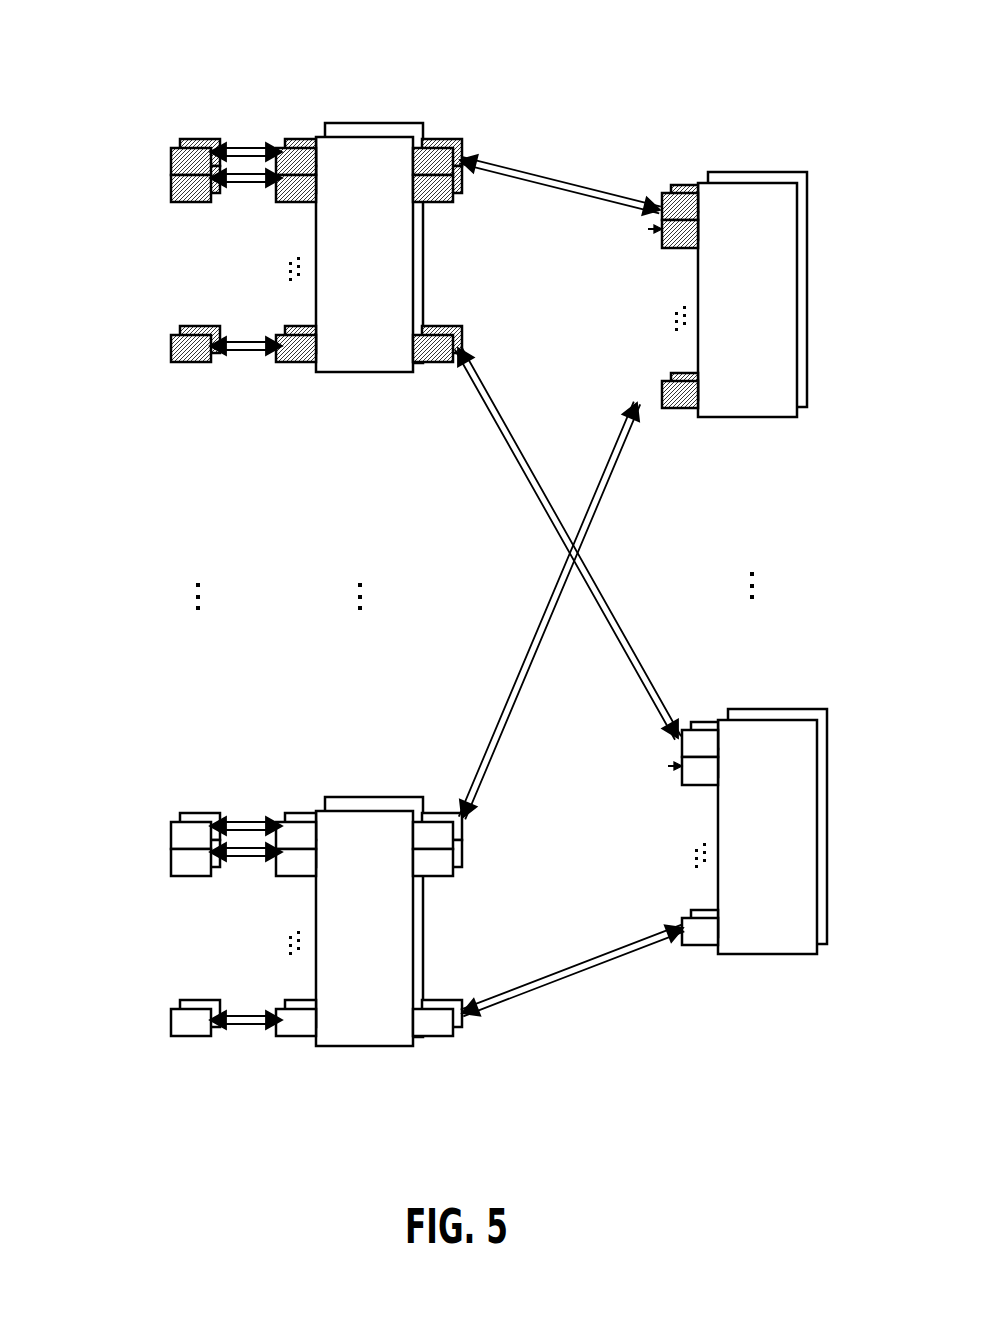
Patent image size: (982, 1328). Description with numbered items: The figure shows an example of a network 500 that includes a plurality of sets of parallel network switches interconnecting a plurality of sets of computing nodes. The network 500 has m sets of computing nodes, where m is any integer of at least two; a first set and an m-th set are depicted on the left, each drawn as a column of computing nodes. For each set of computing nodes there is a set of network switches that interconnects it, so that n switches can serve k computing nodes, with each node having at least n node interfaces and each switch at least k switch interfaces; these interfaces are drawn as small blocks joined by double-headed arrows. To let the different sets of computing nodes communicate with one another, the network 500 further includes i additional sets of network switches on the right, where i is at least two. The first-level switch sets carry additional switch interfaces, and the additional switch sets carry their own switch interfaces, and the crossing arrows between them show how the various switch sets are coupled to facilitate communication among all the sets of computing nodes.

The network 500 is at (119, 37).